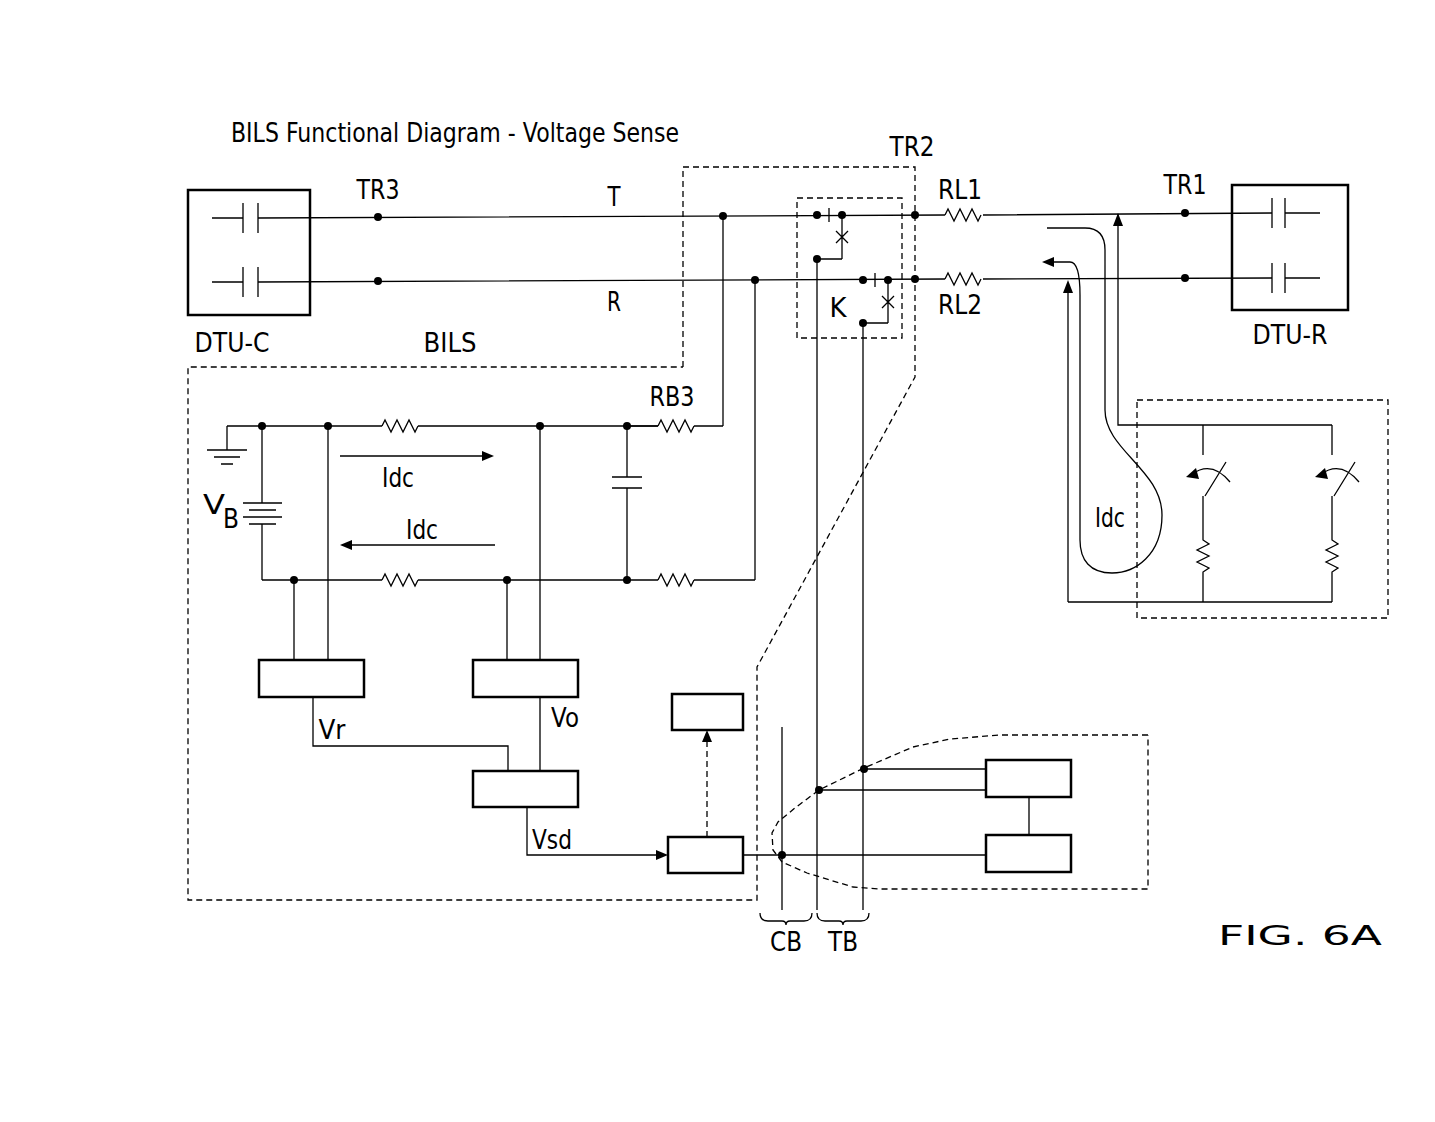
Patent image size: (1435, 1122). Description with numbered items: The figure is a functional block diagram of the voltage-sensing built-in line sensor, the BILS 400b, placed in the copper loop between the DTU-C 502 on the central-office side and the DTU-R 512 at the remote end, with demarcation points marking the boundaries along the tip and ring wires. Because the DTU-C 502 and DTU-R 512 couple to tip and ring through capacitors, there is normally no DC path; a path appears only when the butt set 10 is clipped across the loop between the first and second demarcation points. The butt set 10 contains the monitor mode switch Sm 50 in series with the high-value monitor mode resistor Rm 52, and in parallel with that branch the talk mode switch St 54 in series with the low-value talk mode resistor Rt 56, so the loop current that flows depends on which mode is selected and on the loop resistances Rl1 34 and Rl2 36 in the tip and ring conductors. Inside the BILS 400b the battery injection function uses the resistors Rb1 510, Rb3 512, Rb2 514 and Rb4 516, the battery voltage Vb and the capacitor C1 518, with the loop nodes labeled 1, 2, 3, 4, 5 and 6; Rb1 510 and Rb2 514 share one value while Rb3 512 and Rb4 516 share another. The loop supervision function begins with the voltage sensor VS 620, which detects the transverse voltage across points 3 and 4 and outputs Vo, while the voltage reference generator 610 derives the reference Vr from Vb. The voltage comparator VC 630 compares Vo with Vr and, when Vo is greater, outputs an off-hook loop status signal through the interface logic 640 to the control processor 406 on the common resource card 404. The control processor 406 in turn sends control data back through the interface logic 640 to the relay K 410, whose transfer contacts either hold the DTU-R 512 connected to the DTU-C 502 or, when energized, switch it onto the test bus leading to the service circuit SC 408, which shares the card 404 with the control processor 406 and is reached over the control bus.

The BILS terminal node 1 is at (328, 522).
The BILS terminal node 2 is at (294, 601).
The point 3 is at (540, 522).
The point 4 is at (507, 601).
The BILS tip terminal node 5 is at (723, 300).
The BILS ring terminal node 6 is at (755, 411).
The butt set 10 is at (1190, 400).
The resistor Rl1 34 is at (983, 215).
The resistor Rl2 36 is at (983, 279).
The monitor mode switch Sm 50 is at (1212, 490).
The monitor mode resistor Rm 52 is at (1197, 558).
The talk mode switch St 54 is at (1341, 490).
The talk mode resistor Rt 56 is at (1327, 558).
The built-in line sensor (BILS) voltage sense circuit 400b is at (596, 367).
The common resource card 404 is at (1055, 735).
The control processor CTRL 406 is at (1071, 845).
The service circuit SC 408 is at (1071, 768).
The relay K 410 is at (797, 338).
The DTU-C 502 is at (310, 297).
The DTU-R 512 is at (1262, 185).
The resistor Rb1 510 is at (420, 418).
The resistor Rb2 514 is at (420, 584).
The resistor Rb4 516 is at (660, 584).
The capacitor C1 518 is at (630, 490).
The voltage reference generator VRG 610 is at (259, 680).
The voltage sensor VS 620 is at (578, 676).
The voltage comparator VC 630 is at (578, 790).
The interface logic IFL 640 is at (680, 835).